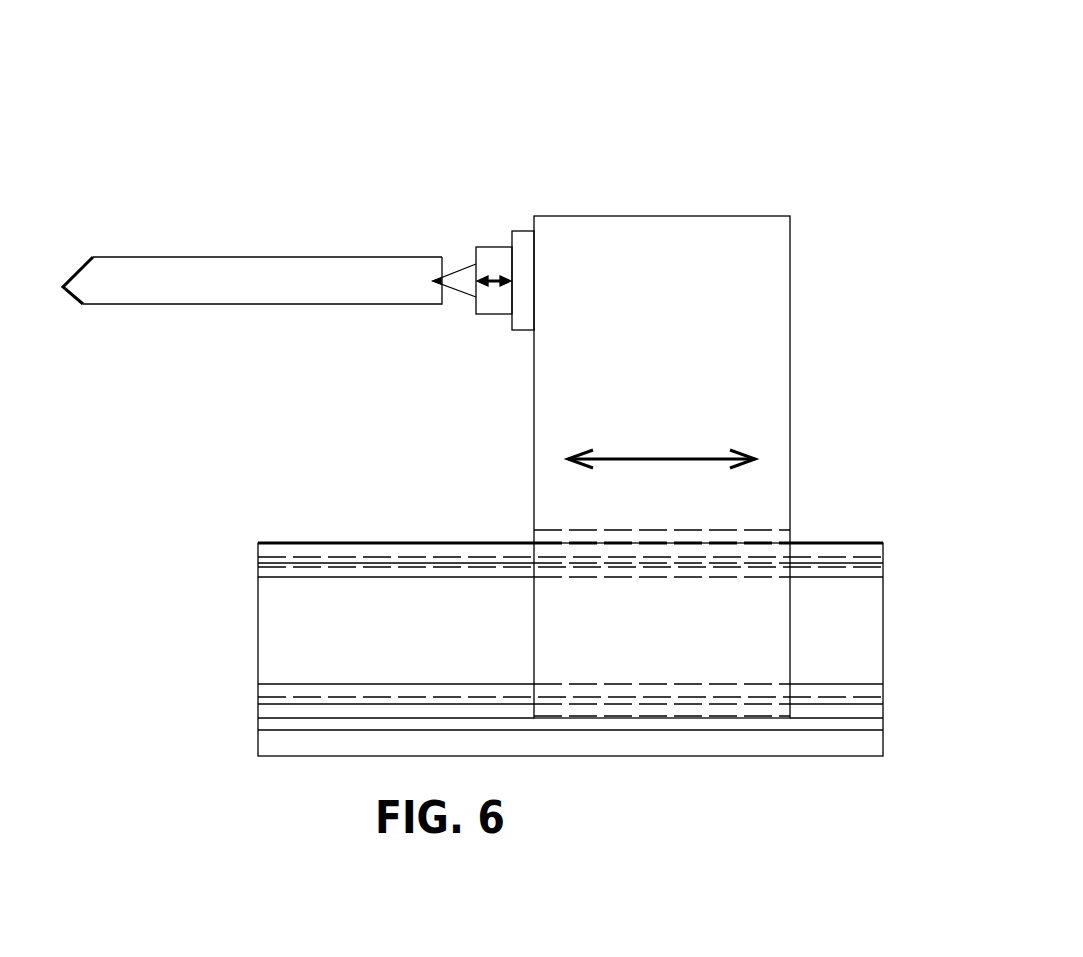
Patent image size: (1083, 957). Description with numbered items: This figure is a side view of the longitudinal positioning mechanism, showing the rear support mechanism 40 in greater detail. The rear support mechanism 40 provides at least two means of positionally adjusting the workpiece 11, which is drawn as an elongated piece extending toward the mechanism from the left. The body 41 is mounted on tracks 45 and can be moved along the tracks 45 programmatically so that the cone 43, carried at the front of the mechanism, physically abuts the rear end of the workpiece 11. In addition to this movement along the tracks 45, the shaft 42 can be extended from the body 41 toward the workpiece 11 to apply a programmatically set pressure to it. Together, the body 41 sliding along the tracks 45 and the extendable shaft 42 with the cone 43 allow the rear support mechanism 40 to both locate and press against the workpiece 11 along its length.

The workpiece 11 is at (191, 280).
The rear support mechanism 40 is at (570, 388).
The body 41 is at (641, 341).
The shaft 42 is at (492, 267).
The cone 43 is at (458, 279).
The tracks 45 is at (363, 652).